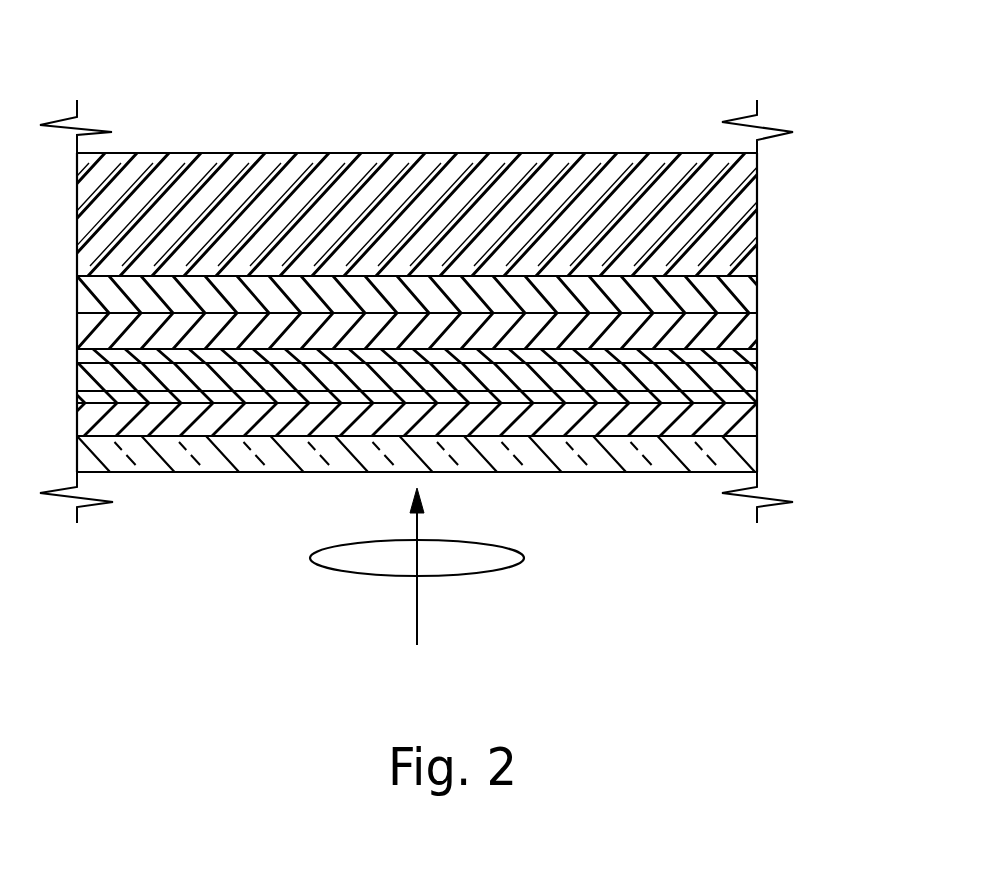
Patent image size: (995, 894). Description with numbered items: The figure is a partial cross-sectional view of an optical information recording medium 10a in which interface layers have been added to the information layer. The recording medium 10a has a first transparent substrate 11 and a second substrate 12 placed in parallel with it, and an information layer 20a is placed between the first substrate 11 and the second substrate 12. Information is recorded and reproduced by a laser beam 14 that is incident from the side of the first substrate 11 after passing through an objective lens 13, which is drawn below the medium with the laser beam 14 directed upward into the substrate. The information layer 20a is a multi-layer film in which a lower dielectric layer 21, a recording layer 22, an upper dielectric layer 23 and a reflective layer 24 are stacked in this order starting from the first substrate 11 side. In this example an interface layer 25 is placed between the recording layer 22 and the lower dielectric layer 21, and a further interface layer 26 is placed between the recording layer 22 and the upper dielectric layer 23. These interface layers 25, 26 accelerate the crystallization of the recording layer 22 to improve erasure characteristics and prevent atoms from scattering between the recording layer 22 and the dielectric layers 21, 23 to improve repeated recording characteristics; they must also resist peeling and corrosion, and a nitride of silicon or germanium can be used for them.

The recording medium 10a is at (87, 81).
The first transparent substrate 11 is at (758, 453).
The second substrate 12 is at (758, 215).
The objective lens 13 is at (523, 558).
The laser beam 14 is at (418, 627).
The information layer 20a is at (824, 267).
The lower dielectric layer 21 is at (758, 422).
The recording layer 22 is at (758, 377).
The upper dielectric layer 23 is at (758, 325).
The reflective layer 24 is at (758, 293).
The interface layer 25 is at (758, 393).
The interface layer 26 is at (758, 355).